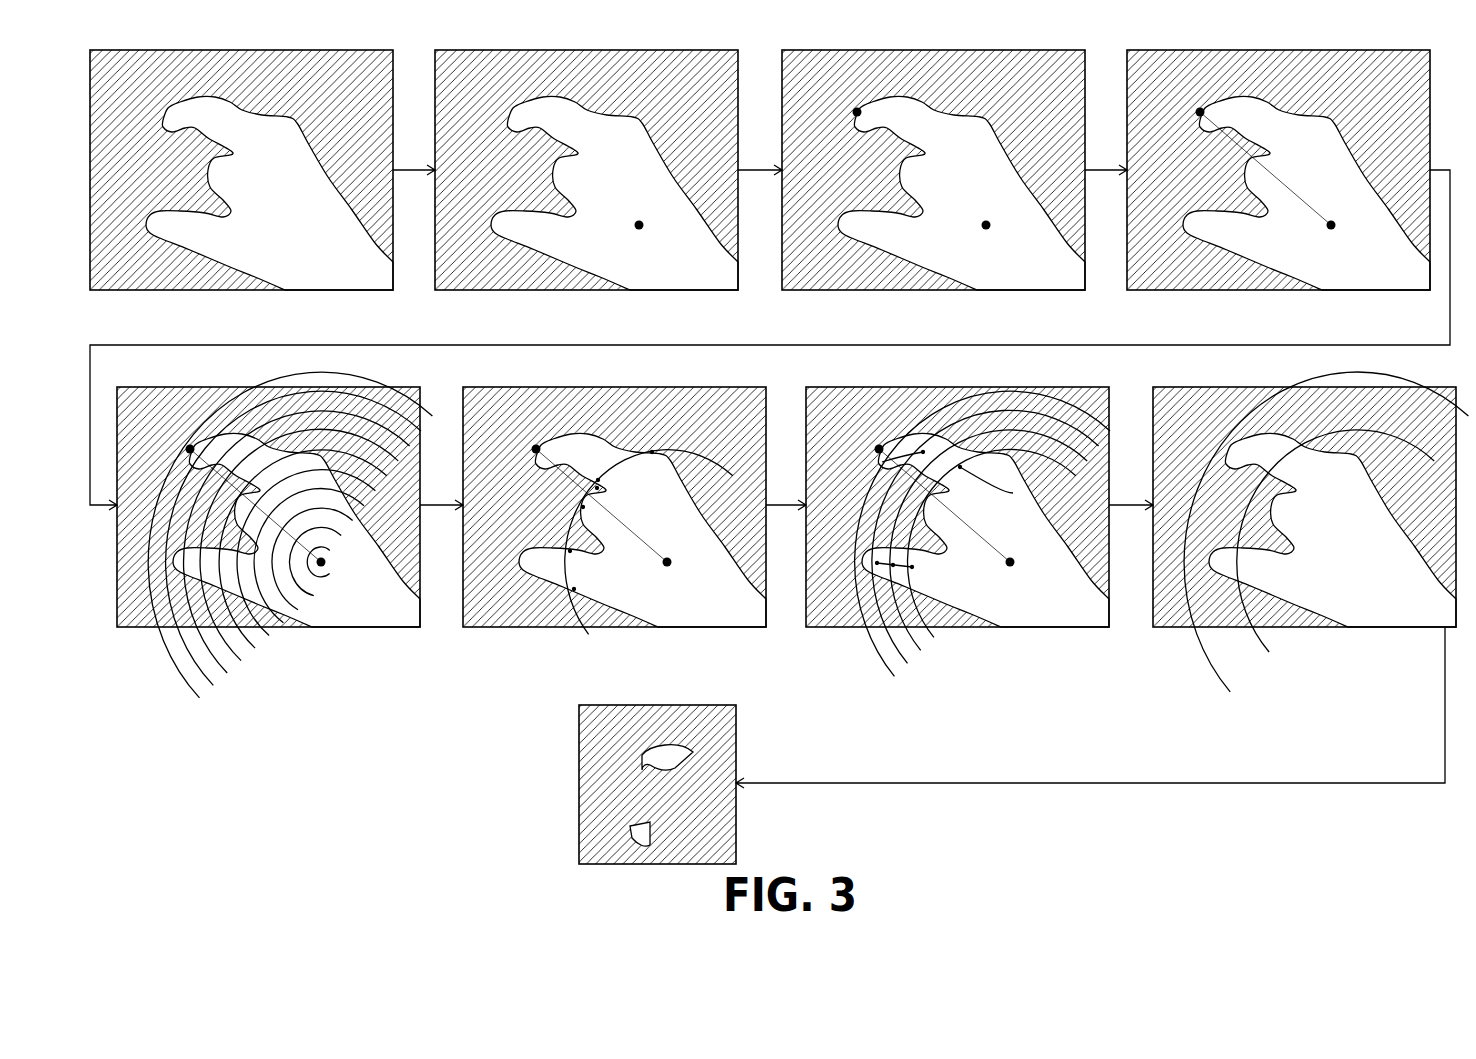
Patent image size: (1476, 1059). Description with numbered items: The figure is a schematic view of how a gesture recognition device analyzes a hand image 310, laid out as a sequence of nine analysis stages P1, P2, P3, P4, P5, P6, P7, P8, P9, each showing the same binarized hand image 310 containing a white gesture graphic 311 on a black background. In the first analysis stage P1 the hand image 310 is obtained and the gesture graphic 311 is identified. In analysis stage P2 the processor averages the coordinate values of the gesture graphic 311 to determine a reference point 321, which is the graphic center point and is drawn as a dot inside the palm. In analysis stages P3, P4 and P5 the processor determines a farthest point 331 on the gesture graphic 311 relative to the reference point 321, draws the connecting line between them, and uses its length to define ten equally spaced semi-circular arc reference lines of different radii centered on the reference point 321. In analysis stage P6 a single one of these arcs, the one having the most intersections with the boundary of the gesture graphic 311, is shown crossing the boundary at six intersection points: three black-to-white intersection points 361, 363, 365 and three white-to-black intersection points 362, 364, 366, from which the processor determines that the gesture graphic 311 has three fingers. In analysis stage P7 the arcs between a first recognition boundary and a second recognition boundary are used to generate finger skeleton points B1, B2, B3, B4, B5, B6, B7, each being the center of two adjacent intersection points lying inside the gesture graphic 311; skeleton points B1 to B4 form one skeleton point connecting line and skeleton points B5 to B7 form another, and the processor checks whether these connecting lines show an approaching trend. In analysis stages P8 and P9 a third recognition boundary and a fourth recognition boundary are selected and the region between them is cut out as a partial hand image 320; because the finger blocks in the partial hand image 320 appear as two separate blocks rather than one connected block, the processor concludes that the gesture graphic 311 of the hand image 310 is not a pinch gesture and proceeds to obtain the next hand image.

The hand image 310 is at (1288, 360).
The gesture graphic 311 is at (801, 386).
The partial hand image 320 is at (579, 768).
The reference point 321 is at (820, 394).
The farthest point 331 is at (733, 234).
The intersection point 361 is at (652, 452).
The intersection point 362 is at (598, 480).
The intersection point 363 is at (597, 488).
The intersection point 364 is at (583, 507).
The intersection point 365 is at (570, 551).
The intersection point 366 is at (574, 589).
The finger skeleton point B1 is at (1013, 493).
The finger skeleton point B2 is at (950, 432).
The finger skeleton point B3 is at (890, 493).
The finger skeleton point B4 is at (882, 462).
The finger skeleton point B5 is at (890, 527).
The finger skeleton point B6 is at (873, 557).
The finger skeleton point B7 is at (880, 587).
The analysis stage P1 is at (241, 151).
The analysis stage P2 is at (586, 151).
The analysis stage P3 is at (933, 151).
The analysis stage P4 is at (1278, 151).
The analysis stage P5 is at (268, 488).
The analysis stage P6 is at (614, 488).
The analysis stage P7 is at (957, 488).
The analysis stage P8 is at (1304, 488).
The analysis stage P9 is at (652, 699).